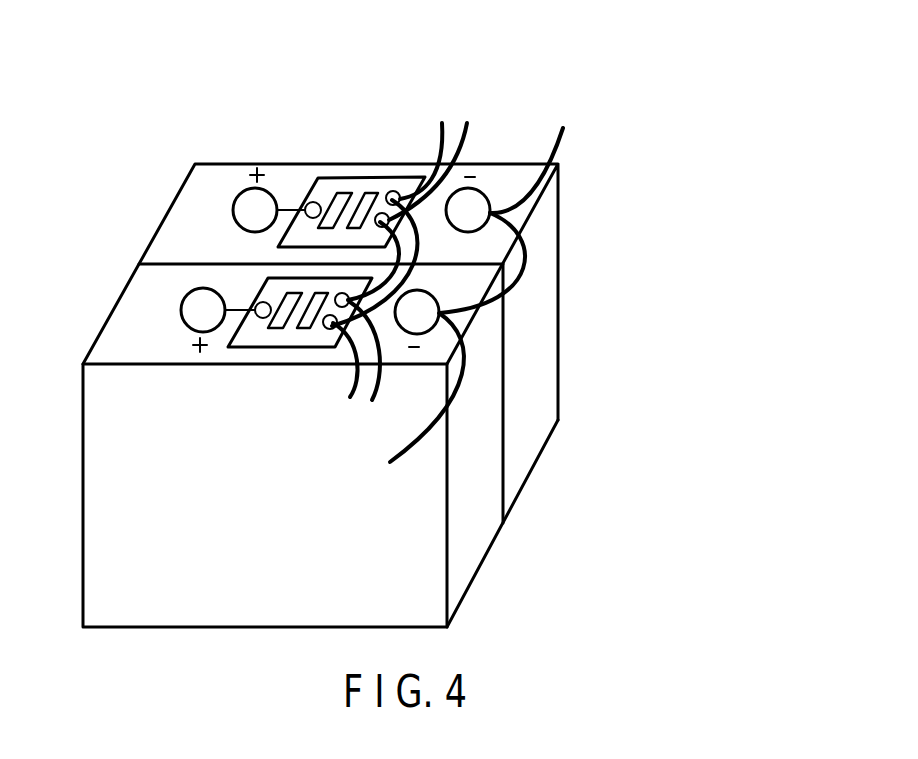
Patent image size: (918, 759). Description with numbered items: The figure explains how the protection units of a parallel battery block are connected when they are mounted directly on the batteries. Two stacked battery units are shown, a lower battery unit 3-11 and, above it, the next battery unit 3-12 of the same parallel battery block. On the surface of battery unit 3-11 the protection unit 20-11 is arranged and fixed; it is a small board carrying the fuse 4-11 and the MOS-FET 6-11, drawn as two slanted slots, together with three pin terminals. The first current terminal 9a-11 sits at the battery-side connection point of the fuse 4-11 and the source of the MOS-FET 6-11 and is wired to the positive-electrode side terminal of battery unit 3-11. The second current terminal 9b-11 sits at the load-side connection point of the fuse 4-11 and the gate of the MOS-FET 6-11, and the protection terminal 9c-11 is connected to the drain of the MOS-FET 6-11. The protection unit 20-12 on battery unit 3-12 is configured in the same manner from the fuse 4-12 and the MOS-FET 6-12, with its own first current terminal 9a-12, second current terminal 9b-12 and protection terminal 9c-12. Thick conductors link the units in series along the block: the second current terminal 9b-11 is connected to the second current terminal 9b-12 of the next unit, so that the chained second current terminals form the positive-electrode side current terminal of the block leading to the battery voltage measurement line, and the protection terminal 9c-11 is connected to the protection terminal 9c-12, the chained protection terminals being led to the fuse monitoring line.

The battery unit 3-11 is at (482, 548).
The battery unit 3-12 is at (535, 448).
The protection unit 20-11 is at (270, 347).
The protection unit 20-12 is at (353, 177).
The fuse 4-11 is at (275, 327).
The fuse 4-12 is at (342, 192).
The MOS-FET 6-11 is at (304, 328).
The MOS-FET 6-12 is at (370, 192).
The first current terminal 9a-11 is at (258, 316).
The first current terminal 9a-12 is at (313, 202).
The second current terminal 9b-11 is at (350, 300).
The second current terminal 9b-12 is at (395, 191).
The protection terminal 9c-11 is at (330, 329).
The protection terminal 9c-12 is at (389, 222).